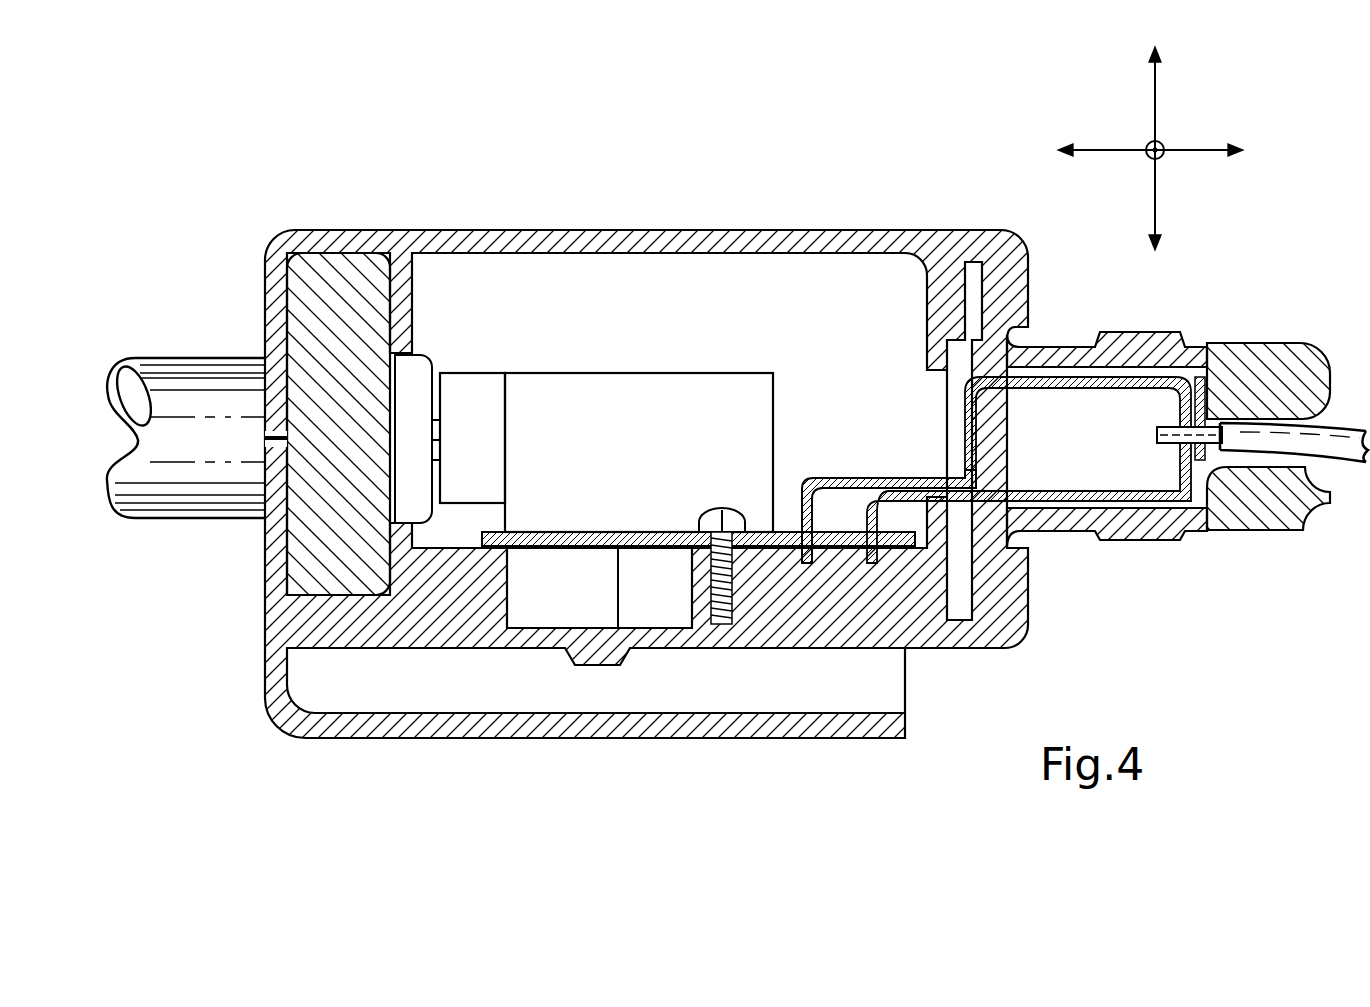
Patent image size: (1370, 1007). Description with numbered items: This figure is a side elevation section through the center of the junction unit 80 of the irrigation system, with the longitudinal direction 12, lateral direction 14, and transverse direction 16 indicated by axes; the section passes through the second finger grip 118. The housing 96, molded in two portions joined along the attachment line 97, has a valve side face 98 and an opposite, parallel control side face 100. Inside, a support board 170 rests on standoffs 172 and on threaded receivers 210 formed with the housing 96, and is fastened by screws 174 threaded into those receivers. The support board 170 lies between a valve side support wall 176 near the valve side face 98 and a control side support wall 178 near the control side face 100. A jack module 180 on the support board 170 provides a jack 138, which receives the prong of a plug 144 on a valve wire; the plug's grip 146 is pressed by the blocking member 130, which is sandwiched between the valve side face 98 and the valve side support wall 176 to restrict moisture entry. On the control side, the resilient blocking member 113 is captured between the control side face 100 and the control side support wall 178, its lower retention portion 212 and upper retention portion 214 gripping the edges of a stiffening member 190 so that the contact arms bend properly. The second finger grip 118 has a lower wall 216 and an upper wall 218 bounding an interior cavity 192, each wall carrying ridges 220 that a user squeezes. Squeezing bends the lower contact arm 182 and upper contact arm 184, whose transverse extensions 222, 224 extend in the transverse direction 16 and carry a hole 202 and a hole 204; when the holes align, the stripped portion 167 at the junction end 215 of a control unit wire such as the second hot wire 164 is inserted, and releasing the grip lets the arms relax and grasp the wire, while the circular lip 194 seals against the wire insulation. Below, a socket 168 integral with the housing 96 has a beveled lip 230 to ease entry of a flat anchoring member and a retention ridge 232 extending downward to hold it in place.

The longitudinal direction 12 is at (1192, 152).
The lateral direction 14 is at (1160, 146).
The transverse direction 16 is at (1152, 102).
The junction unit 80 is at (534, 150).
The housing 96 is at (845, 222).
The attachment line 97 is at (270, 448).
The valve side face 98 is at (300, 240).
The control side face 100 is at (1038, 262).
The blocking member 113 is at (1000, 255).
The second finger grip 118 is at (1250, 345).
The blocking member 130 is at (345, 272).
The jack 138 is at (440, 385).
The plug 144 is at (130, 533).
The grip 146 is at (190, 368).
The second hot wire 164 is at (1310, 470).
The stripped portion 167 is at (1150, 436).
The socket 168 is at (252, 720).
The support board 170 is at (600, 530).
The standoff 172 is at (512, 585).
The screw 174 is at (745, 530).
The valve side support wall 176 is at (422, 258).
The control side support wall 178 is at (912, 248).
The jack module 180 is at (627, 375).
The lower contact arm 182 is at (1055, 550).
The upper contact arm 184 is at (978, 432).
The stiffening member 190 is at (1003, 590).
The interior cavity 192 is at (1215, 345).
The circular lip 194 is at (1265, 470).
The hole 202 is at (1045, 352).
The hole 204 is at (1207, 538).
The threaded receiver 210 is at (830, 605).
The lower retention portion 212 is at (930, 600).
The upper retention portion 214 is at (935, 337).
The junction end 215 is at (1270, 338).
The lower wall 216 is at (1072, 548).
The upper wall 218 is at (1000, 330).
The ridge 220 is at (1140, 333).
The transverse extension 222 is at (1178, 347).
The transverse extension 224 is at (1160, 542).
The beveled lip 230 is at (885, 720).
The retention ridge 232 is at (600, 662).